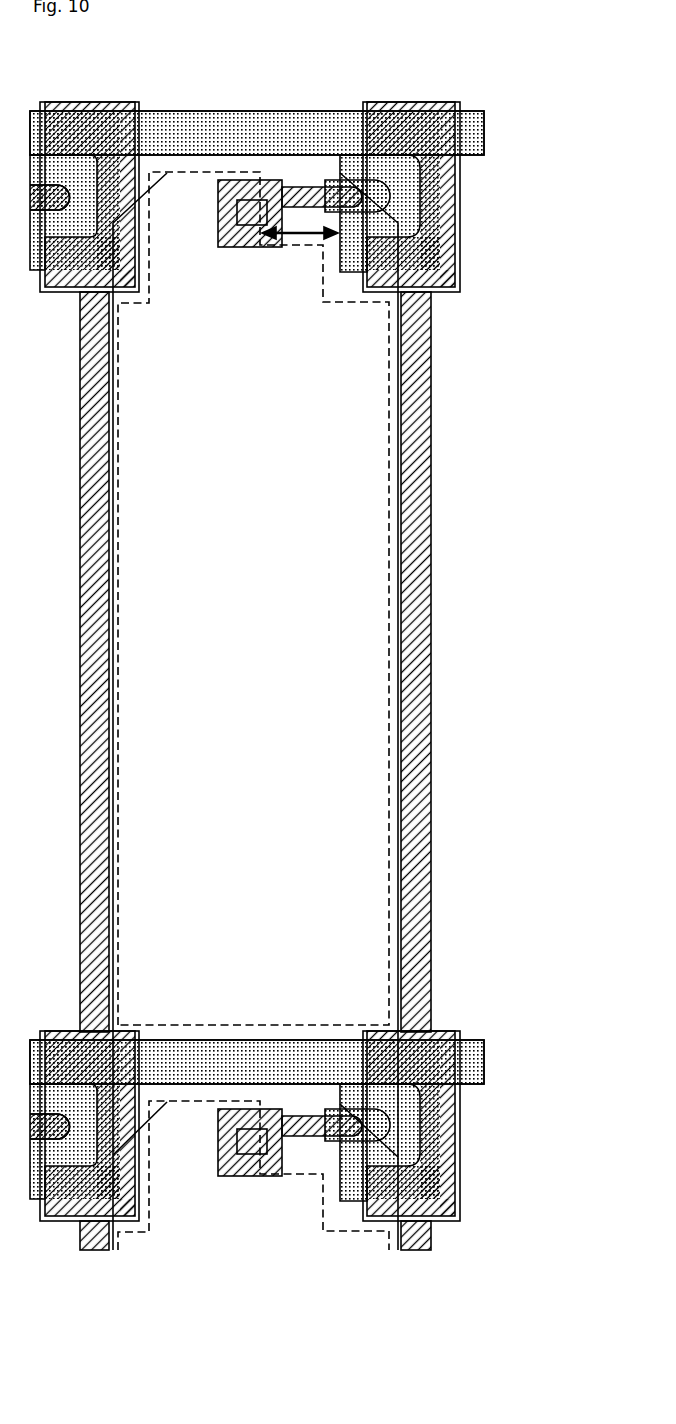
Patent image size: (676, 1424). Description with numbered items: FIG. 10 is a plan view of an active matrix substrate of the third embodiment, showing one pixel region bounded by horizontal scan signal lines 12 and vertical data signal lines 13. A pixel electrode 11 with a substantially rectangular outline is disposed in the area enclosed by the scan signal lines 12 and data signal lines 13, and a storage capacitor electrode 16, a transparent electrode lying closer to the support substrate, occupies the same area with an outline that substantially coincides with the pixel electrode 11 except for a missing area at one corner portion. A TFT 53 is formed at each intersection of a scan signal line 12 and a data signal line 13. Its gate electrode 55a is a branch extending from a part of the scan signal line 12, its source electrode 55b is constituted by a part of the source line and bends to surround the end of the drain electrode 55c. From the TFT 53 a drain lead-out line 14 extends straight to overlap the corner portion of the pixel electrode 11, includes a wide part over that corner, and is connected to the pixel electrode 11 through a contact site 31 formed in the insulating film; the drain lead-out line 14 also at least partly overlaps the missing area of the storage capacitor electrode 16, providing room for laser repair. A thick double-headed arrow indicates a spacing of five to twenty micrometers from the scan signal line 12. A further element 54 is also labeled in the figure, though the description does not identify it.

The pixel electrode 11 is at (368, 463).
The scan signal line 12 is at (175, 132).
The data signal line 13 is at (417, 375).
The drain lead-out line 14 is at (305, 197).
The storage capacitor electrode 16 is at (388, 550).
The contact site 31 is at (248, 208).
The TFT 53 is at (573, 165).
The source electrode 54 is at (460, 273).
The gate electrode 55a is at (430, 175).
The source electrode 55b is at (450, 247).
The drain electrode 55c is at (396, 197).